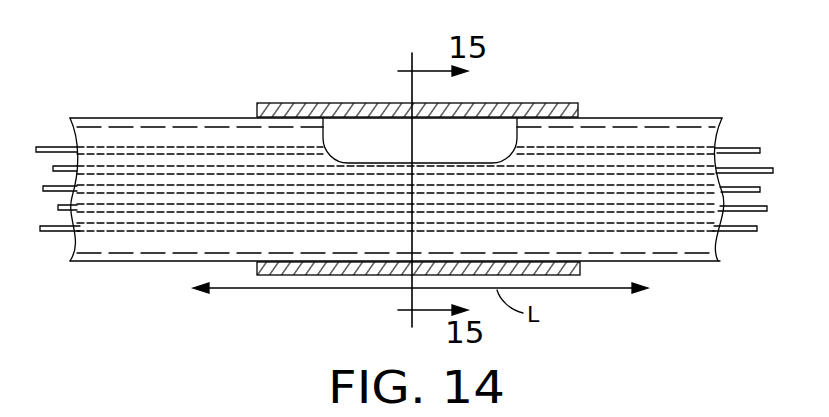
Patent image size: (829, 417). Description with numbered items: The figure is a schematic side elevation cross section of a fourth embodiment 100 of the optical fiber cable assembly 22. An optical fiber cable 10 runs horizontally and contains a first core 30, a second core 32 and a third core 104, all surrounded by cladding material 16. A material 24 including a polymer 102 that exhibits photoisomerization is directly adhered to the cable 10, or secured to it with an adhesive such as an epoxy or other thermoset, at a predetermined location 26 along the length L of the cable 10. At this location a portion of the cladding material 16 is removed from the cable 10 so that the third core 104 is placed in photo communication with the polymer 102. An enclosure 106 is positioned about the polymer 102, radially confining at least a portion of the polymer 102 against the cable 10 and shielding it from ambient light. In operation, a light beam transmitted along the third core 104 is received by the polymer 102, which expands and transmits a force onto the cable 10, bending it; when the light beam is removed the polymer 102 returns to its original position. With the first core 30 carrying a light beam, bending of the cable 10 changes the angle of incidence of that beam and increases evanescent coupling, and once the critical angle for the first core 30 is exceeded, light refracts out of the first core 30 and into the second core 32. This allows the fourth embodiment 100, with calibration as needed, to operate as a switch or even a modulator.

The optical fiber cable 10 is at (680, 117).
The cladding material 16 is at (190, 132).
The optical fiber cable assembly 22 is at (520, 55).
The material 24 is at (496, 120).
The predetermined location 26 is at (198, 275).
The first core 30 is at (637, 190).
The second core 32 is at (160, 173).
The fourth embodiment 100 is at (570, 60).
The polymer 102 is at (350, 130).
The third core 104 is at (130, 147).
The enclosure 106 is at (393, 102).